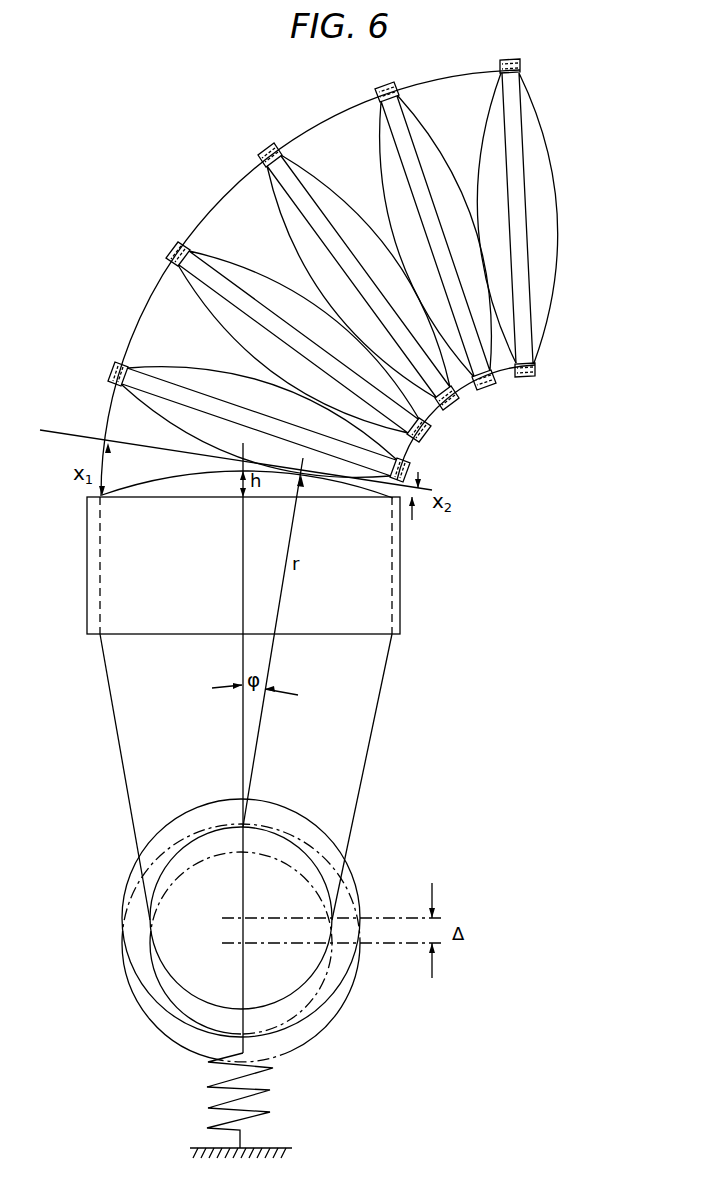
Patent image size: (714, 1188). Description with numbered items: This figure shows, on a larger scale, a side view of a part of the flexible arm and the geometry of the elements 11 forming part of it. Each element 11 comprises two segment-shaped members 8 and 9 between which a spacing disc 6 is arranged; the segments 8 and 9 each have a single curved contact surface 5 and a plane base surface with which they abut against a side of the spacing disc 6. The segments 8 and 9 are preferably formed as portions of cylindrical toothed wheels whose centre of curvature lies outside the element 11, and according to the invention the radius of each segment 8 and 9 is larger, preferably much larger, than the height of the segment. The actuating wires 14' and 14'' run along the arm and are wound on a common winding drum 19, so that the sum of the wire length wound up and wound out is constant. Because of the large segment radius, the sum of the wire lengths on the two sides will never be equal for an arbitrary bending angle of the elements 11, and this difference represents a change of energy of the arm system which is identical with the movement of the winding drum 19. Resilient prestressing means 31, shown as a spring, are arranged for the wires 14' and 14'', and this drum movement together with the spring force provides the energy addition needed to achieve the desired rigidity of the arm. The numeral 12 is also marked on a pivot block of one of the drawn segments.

The curved contact surface 5 is at (380, 157).
The spacing disc 6 is at (170, 252).
The segment-shaped member 8 is at (547, 150).
The segment-shaped member 9 is at (483, 138).
The element 11 is at (566, 232).
The slat pivot block 12 is at (270, 143).
The wire 14' is at (274, 495).
The wire 14'' is at (448, 642).
The winding drum 19 is at (140, 938).
The resilient prestressing means 31 is at (208, 1087).